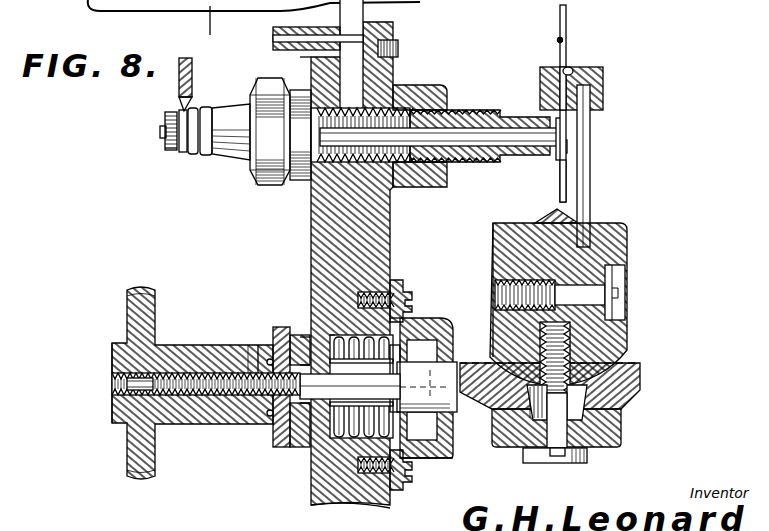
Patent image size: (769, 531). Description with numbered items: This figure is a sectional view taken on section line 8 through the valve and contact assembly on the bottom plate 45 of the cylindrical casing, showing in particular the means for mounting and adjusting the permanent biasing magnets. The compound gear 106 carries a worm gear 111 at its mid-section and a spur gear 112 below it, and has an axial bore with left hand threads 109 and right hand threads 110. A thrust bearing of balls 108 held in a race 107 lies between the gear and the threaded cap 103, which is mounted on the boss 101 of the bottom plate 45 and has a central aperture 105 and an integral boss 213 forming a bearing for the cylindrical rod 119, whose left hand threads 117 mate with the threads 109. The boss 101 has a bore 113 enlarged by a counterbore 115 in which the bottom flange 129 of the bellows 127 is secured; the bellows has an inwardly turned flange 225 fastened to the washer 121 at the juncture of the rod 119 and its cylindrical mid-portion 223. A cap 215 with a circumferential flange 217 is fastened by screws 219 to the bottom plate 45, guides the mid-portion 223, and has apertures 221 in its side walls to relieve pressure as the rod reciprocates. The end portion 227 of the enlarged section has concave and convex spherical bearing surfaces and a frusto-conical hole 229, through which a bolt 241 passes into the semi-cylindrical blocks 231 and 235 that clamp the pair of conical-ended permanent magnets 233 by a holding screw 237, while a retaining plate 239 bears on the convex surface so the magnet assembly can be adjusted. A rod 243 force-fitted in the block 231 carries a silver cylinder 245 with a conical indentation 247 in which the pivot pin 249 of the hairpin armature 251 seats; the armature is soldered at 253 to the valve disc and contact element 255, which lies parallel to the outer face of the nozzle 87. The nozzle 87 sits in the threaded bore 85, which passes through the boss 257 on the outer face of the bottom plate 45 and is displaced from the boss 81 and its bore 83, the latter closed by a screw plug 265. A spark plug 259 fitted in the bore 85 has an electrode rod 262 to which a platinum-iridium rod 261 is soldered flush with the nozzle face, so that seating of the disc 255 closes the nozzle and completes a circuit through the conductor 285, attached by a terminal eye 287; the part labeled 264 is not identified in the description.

The section line 8 is at (232, 24).
The bottom plate 45 is at (311, 228).
The boss 81 is at (278, 57).
The bore 83 is at (273, 43).
The threaded bore 85 is at (418, 168).
The nozzle 87 is at (475, 108).
The boss 101 is at (317, 407).
The threaded cap 103 is at (297, 427).
The central aperture 105 is at (285, 327).
The compound gear 106 is at (187, 350).
The race 107 is at (240, 408).
The balls 108 is at (269, 357).
The left hand threads 109 is at (197, 397).
The right hand threads 110 is at (112, 398).
The worm gear 111 is at (127, 313).
The spur gear 112 is at (250, 347).
The bore 113 is at (313, 401).
The counterbore 115 is at (362, 445).
The left hand threads 117 is at (243, 348).
The cylindrical rod 119 is at (327, 430).
The washer 121 is at (412, 332).
The bellows 127 is at (363, 440).
The bottom flange 129 is at (335, 345).
The integral boss 213 is at (303, 337).
The cap 215 is at (441, 330).
The circumferential flange 217 is at (394, 286).
The screws 219 is at (407, 290).
The apertures 221 is at (428, 351).
The cylindrical mid-portion 223 is at (452, 427).
The inwardly turned flange 225 is at (412, 470).
The end portion 227 is at (643, 382).
The frusto-conical hole 229 is at (585, 408).
The semi-cylindrical block 231 is at (615, 340).
The cylindrical permanent magnets 233 is at (548, 216).
The semi-cylindrical block 235 is at (493, 244).
The holding screw 237 is at (622, 290).
The retaining plate 239 is at (616, 447).
The bolt 241 is at (577, 463).
The rod 243 is at (590, 183).
The silver cylinder 245 is at (604, 85).
The conical indentation 247 is at (571, 68).
The pivot pin 249 is at (560, 20).
The armature 251 is at (560, 182).
The solder joint 253 is at (563, 138).
The valve disc and contact element 255 is at (567, 152).
The boss 257 is at (439, 84).
The spark plug 259 is at (230, 142).
The platinum-iridium rod 261 is at (520, 130).
The electrode rod 262 is at (164, 129).
The disc 264 is at (175, 152).
The screw plug 265 is at (398, 46).
The conductor 285 is at (178, 92).
The terminal eye 287 is at (196, 110).